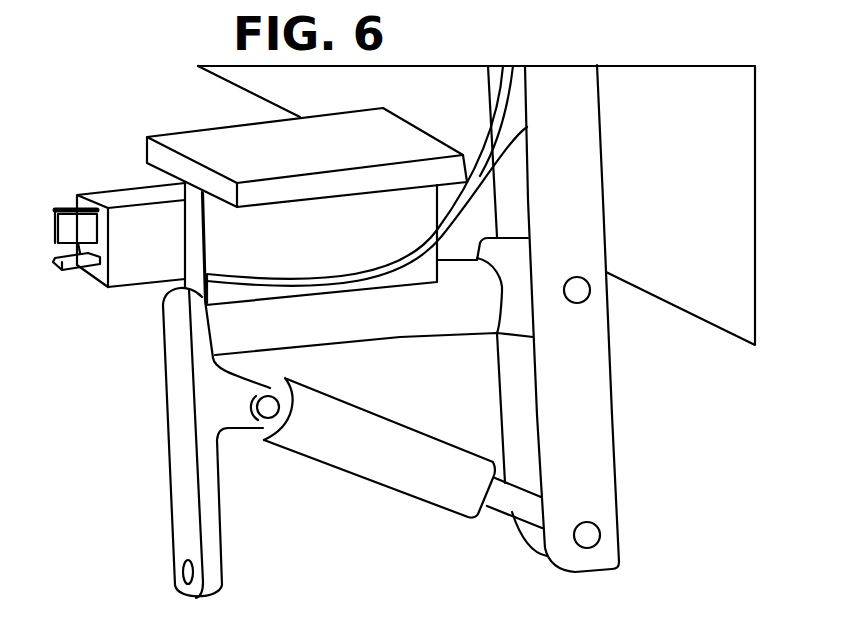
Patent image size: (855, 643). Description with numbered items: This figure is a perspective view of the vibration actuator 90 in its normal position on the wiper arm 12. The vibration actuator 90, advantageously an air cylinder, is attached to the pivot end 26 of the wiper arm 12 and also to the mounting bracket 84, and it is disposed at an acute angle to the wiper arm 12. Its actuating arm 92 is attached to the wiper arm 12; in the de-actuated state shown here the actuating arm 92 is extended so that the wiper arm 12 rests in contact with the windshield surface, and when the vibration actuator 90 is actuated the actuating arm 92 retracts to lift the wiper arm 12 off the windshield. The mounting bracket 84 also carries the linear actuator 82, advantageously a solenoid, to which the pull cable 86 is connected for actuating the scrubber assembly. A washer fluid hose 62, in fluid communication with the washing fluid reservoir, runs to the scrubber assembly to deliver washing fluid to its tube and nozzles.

The wiper arm 12 is at (625, 517).
The pivot end 26 is at (588, 573).
The washer fluid hose 62 is at (417, 265).
The linear actuator 82 is at (124, 176).
The mounting bracket 84 is at (167, 419).
The pull cable 86 is at (497, 153).
The vibration actuator 90 is at (388, 500).
The actuating arm 92 is at (512, 505).